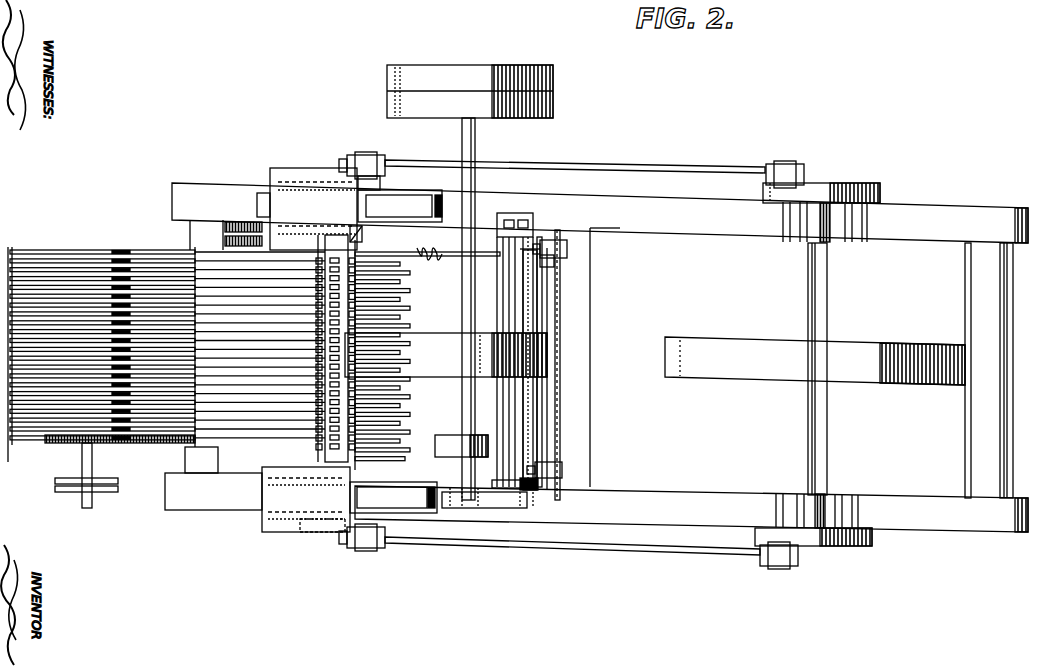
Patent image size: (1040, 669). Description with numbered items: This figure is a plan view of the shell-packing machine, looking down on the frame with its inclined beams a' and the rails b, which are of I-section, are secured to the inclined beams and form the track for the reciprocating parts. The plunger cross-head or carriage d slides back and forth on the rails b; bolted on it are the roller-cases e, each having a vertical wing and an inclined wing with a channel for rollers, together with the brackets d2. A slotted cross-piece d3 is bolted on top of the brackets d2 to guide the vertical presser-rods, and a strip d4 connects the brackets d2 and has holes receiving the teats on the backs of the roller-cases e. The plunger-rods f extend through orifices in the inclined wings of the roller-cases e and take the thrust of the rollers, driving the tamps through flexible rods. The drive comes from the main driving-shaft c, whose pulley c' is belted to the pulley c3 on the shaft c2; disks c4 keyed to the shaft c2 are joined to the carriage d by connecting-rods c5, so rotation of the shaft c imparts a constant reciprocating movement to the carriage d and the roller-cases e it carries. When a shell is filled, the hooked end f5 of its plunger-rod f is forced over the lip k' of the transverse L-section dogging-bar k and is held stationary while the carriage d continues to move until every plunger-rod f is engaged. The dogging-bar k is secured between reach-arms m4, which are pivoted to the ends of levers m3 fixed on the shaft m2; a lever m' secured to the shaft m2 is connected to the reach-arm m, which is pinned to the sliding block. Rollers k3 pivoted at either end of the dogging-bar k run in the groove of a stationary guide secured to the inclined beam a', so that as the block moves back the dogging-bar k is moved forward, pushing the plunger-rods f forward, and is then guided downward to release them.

The inclined beams a' is at (600, 357).
The rails b is at (432, 180).
The main driving-shaft c is at (470, 282).
The pulley c' is at (446, 395).
The shaft c2 is at (818, 300).
The pulley c3 is at (815, 361).
The disks c4 is at (850, 176).
The connecting-rods c5 is at (650, 172).
The plunger cross-head or carriage d is at (268, 520).
The brackets d2 is at (278, 226).
The cross-piece d3 is at (345, 454).
The strip d4 is at (362, 228).
The roller-cases e is at (272, 440).
The plunger-rods f is at (402, 402).
The hooked end f5 is at (412, 420).
The dogging-bar k is at (511, 362).
The lip k' is at (487, 372).
The rollers k3 is at (520, 240).
The reach-arm m is at (427, 269).
The lever m' is at (552, 365).
The shaft m2 is at (530, 402).
The levers m3 is at (560, 242).
The reach-arms m4 is at (556, 262).